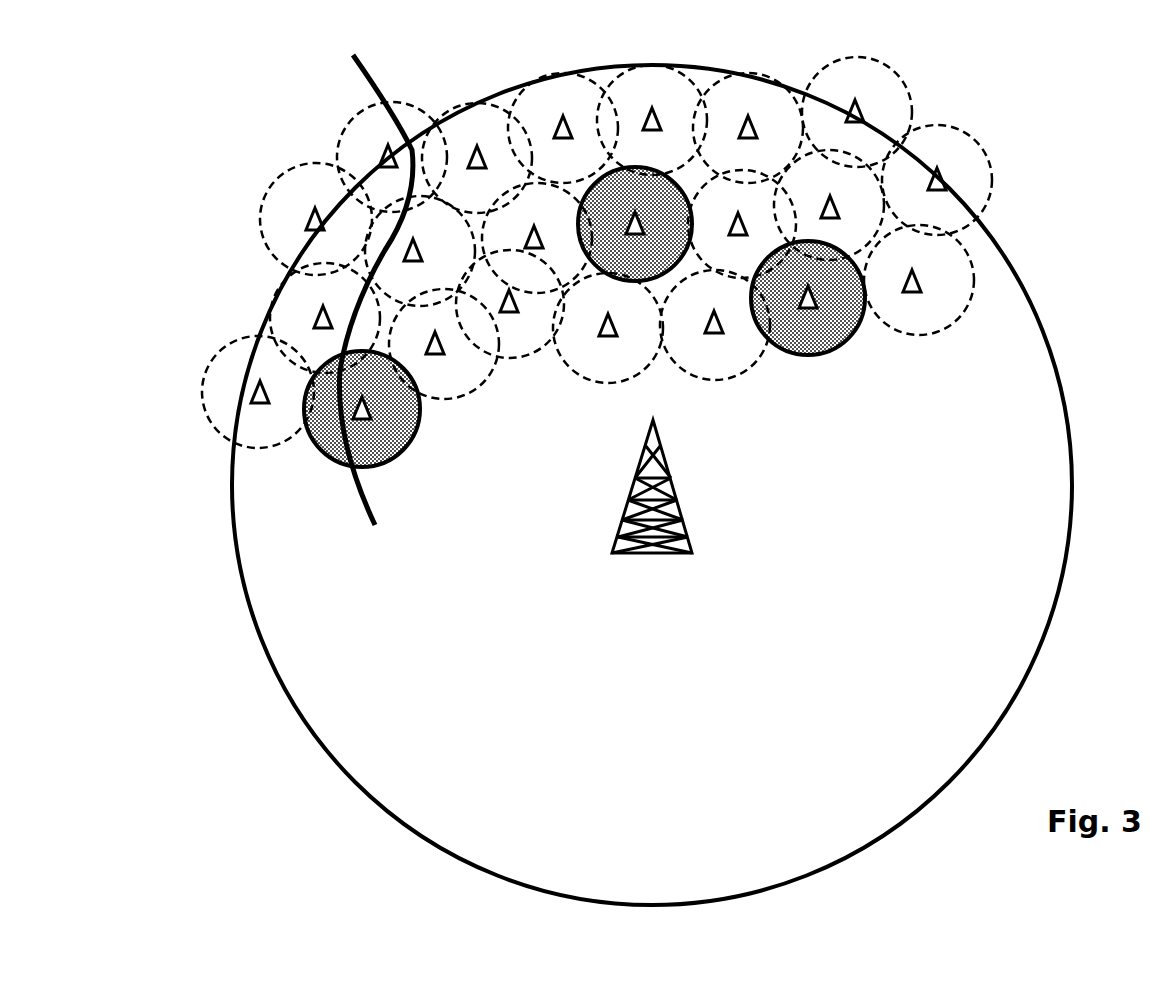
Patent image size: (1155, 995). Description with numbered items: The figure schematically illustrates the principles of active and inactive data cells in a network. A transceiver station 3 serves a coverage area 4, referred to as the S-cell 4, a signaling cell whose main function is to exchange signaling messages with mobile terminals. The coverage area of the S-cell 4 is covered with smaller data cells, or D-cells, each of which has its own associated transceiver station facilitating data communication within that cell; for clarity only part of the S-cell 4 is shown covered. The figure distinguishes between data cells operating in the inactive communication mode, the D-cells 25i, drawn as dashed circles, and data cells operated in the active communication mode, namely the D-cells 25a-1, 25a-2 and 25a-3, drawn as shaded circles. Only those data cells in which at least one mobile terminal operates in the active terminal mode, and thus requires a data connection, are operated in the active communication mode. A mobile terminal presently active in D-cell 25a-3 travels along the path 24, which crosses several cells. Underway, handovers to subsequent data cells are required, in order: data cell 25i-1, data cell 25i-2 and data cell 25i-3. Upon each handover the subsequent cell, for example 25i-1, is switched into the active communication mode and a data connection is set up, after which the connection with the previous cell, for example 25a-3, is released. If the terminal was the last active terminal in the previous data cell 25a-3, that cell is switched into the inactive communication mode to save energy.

The transceiver station 3 is at (680, 496).
The S-cell 4 is at (1072, 525).
The path 24 is at (377, 80).
The inactive data cell 25i is at (263, 193).
The data cell 25i-1 is at (272, 326).
The data cell 25i-2 is at (395, 172).
The data cell 25i-3 is at (418, 104).
The active data cell 25a-1 is at (815, 360).
The active data cell 25a-2 is at (608, 280).
The active data cell 25a-3 is at (403, 450).